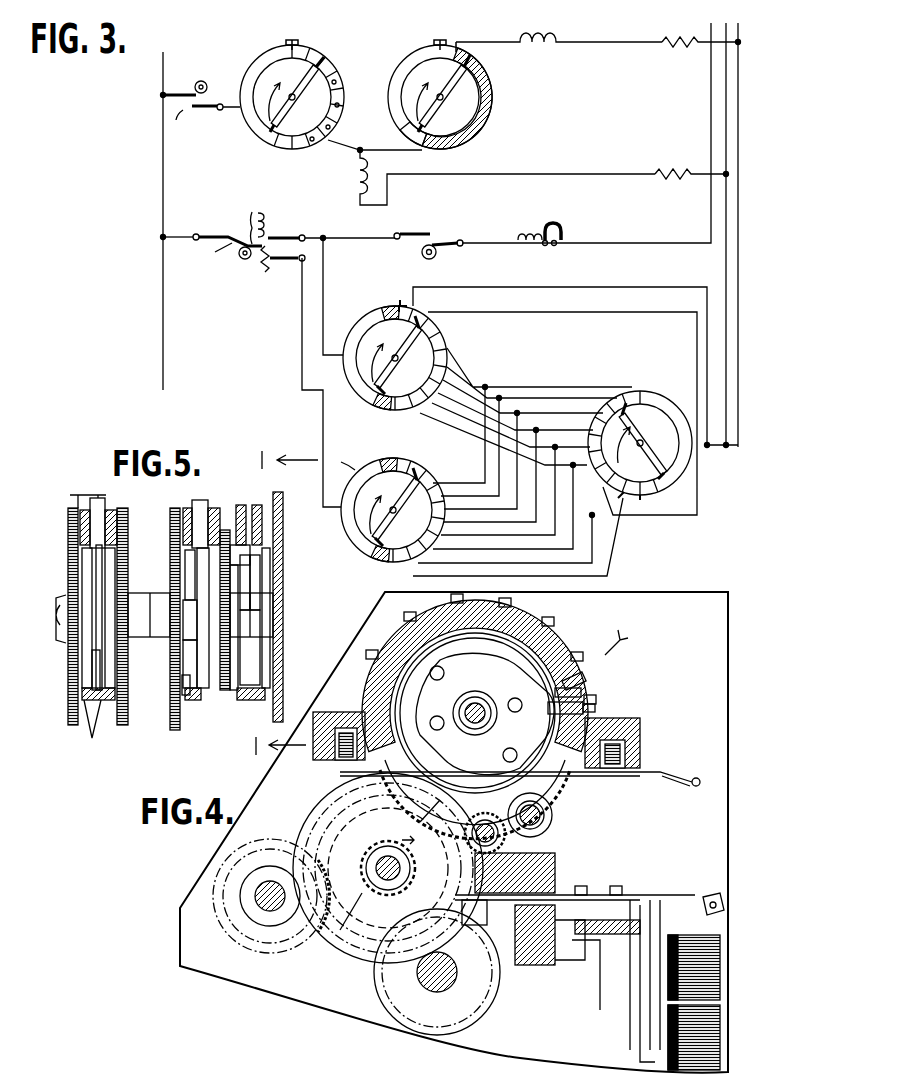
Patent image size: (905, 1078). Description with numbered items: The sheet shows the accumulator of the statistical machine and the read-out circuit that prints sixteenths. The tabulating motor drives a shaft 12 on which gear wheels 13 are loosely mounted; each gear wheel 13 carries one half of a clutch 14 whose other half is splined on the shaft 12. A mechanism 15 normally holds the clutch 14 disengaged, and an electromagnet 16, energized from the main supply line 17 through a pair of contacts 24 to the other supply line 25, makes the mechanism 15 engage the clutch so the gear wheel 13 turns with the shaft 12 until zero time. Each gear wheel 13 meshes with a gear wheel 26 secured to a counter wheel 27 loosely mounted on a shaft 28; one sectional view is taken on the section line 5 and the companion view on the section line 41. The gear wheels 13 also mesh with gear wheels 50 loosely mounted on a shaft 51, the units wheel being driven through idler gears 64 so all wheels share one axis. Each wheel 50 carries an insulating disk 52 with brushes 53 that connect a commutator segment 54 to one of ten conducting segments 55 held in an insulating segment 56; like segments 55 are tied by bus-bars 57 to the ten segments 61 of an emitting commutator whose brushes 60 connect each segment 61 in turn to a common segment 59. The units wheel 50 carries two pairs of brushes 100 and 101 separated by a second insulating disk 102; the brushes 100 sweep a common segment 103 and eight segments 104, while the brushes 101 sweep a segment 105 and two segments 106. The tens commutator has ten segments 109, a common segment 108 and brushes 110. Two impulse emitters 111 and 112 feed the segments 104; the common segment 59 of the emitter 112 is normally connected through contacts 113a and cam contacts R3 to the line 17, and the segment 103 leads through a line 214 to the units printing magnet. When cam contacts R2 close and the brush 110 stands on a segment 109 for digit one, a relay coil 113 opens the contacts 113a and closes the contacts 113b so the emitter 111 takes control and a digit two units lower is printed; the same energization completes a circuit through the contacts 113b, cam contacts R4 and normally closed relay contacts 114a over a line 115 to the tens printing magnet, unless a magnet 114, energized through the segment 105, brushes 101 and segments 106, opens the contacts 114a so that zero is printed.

In FIG. 4, the section line 5— 5 is at (519, 740).
In FIG. 4, the shaft 12 is at (378, 858).
In FIG. 4, the gear wheel 13 is at (352, 802).
In FIG. 4, the clutch 14 is at (388, 881).
In FIG. 4, the mechanism 15 is at (644, 895).
In FIG. 4, the electromagnet 16 is at (720, 972).
In FIG. 3, the main supply line 17 is at (163, 162).
In FIG. 4, the contacts 24 is at (710, 895).
In FIG. 3, the supply line 25 is at (740, 98).
In FIG. 4, the gear wheel 26 is at (271, 941).
In FIG. 4, the counter wheel 27 is at (236, 942).
In FIG. 4, the shaft 28 is at (258, 905).
In FIG. 5, the section line 41- 41 is at (278, 604).
In FIG. 5, the gear wheel 50 is at (68, 716).
In FIG. 4, the gear wheel 50 is at (552, 812).
In FIG. 5, the shaft 51 is at (56, 600).
In FIG. 4, the shaft 51 is at (462, 708).
In FIG. 5, the insulating disk 52 is at (78, 645).
In FIG. 5, the brushes 53 is at (182, 682).
In FIG. 4, the brushes 53 is at (582, 692).
In FIG. 5, the commutator segment 54 is at (95, 721).
In FIG. 5, the conducting segments 55 is at (102, 500).
In FIG. 4, the conducting segments 55 is at (586, 678).
In FIG. 5, the insulating segment 56 is at (128, 512).
In FIG. 4, the insulating segment 56 is at (640, 732).
In FIG. 5, the bus-bars 57 is at (76, 494).
In FIG. 3, the common segment 59 is at (398, 306).
In FIG. 3, the brushes 60 is at (388, 323).
In FIG. 3, the segments 61 is at (372, 404).
In FIG. 4, the idler gears 64 is at (548, 835).
In FIG. 3, the brushes 100 is at (630, 455).
In FIG. 5, the brushes 100 is at (250, 590).
In FIG. 3, the brushes 101 is at (430, 70).
In FIG. 5, the brushes 101 is at (262, 607).
In FIG. 4, the brushes 101 is at (500, 660).
In FIG. 5, the second insulating disk 102 is at (258, 628).
In FIG. 4, the second insulating disk 102 is at (455, 660).
In FIG. 3, the common conducting segment 103 is at (658, 502).
In FIG. 5, the common conducting segment 103 is at (242, 702).
In FIG. 3, the insulated segments 104 is at (652, 395).
In FIG. 5, the insulated segments 104 is at (242, 505).
In FIG. 4, the insulated segments 104 is at (552, 625).
In FIG. 3, the segment 105 is at (395, 118).
In FIG. 5, the segment 105 is at (272, 688).
In FIG. 4, the segment 105 is at (585, 776).
In FIG. 3, the segments 106 is at (442, 35).
In FIG. 5, the segments 106 is at (262, 505).
In FIG. 4, the segments 106 is at (596, 708).
In FIG. 3, the common segment 108 is at (285, 45).
In FIG. 5, the common segment 108 is at (196, 702).
In FIG. 3, the insulated segments 109 is at (328, 60).
In FIG. 5, the insulated segments 109 is at (200, 500).
In FIG. 3, the brushes 110 is at (270, 70).
In FIG. 5, the brushes 110 is at (190, 590).
In FIG. 3, the impulse emitter 111 is at (358, 368).
In FIG. 3, the impulse emitter 112 is at (378, 480).
In FIG. 3, the relay coil 113 is at (358, 176).
In FIG. 3, the contacts 113a is at (278, 272).
In FIG. 3, the contacts 113b is at (250, 196).
In FIG. 3, the magnet 114 is at (550, 45).
In FIG. 3, the relay contacts 114a is at (565, 231).
In FIG. 3, the line 115 is at (711, 98).
In FIG. 3, the line 214 is at (726, 118).
In FIG. 3, the cam contacts R2 is at (201, 108).
In FIG. 3, the cam contacts R3 is at (212, 256).
In FIG. 3, the cam contacts R4 is at (438, 232).